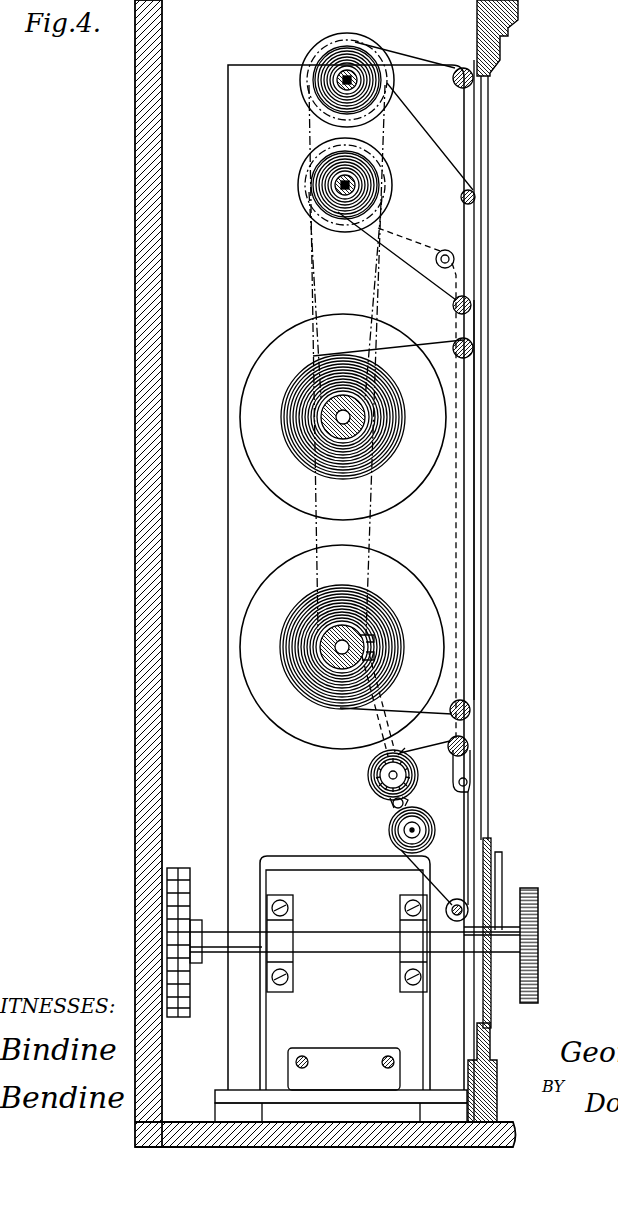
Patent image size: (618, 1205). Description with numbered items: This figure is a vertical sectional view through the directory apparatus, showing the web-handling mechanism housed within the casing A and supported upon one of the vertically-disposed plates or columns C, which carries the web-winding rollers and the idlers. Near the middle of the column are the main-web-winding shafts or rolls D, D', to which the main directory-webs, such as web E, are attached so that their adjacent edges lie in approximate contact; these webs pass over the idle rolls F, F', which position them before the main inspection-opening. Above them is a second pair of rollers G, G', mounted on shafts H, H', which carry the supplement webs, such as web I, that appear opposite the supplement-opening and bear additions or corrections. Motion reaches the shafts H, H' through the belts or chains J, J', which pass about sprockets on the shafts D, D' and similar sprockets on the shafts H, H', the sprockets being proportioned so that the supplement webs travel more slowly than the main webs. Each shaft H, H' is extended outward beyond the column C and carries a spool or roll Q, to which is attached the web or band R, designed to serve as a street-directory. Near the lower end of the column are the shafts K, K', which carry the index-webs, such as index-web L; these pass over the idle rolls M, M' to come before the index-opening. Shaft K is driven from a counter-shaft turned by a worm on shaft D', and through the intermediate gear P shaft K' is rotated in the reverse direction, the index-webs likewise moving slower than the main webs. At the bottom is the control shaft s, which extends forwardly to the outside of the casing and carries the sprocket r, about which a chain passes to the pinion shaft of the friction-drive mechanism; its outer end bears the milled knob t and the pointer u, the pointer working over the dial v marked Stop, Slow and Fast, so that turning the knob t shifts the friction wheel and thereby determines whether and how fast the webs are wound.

The casing A is at (500, 22).
The web I is at (485, 147).
The web E is at (480, 481).
The roller G is at (336, 79).
The shaft H is at (309, 91).
The roller G' is at (327, 186).
The shaft H' is at (309, 176).
The belt J is at (326, 360).
The belt J' is at (322, 296).
The web R is at (484, 311).
The idle roll F is at (450, 352).
The main-web-winding shaft D is at (343, 417).
The main-web-winding shaft D' is at (342, 647).
The idle roll F' is at (450, 701).
The idle roll M is at (445, 756).
The spool Q is at (399, 745).
The index-web L is at (478, 806).
The shaft K is at (375, 775).
The intermediate gear P is at (406, 803).
The shaft K' is at (392, 830).
The idle roll M' is at (453, 891).
The plate C is at (265, 790).
The dial v is at (492, 840).
The pointer u is at (503, 872).
The knob t is at (540, 904).
The shaft s is at (346, 937).
The sprocket r is at (185, 874).